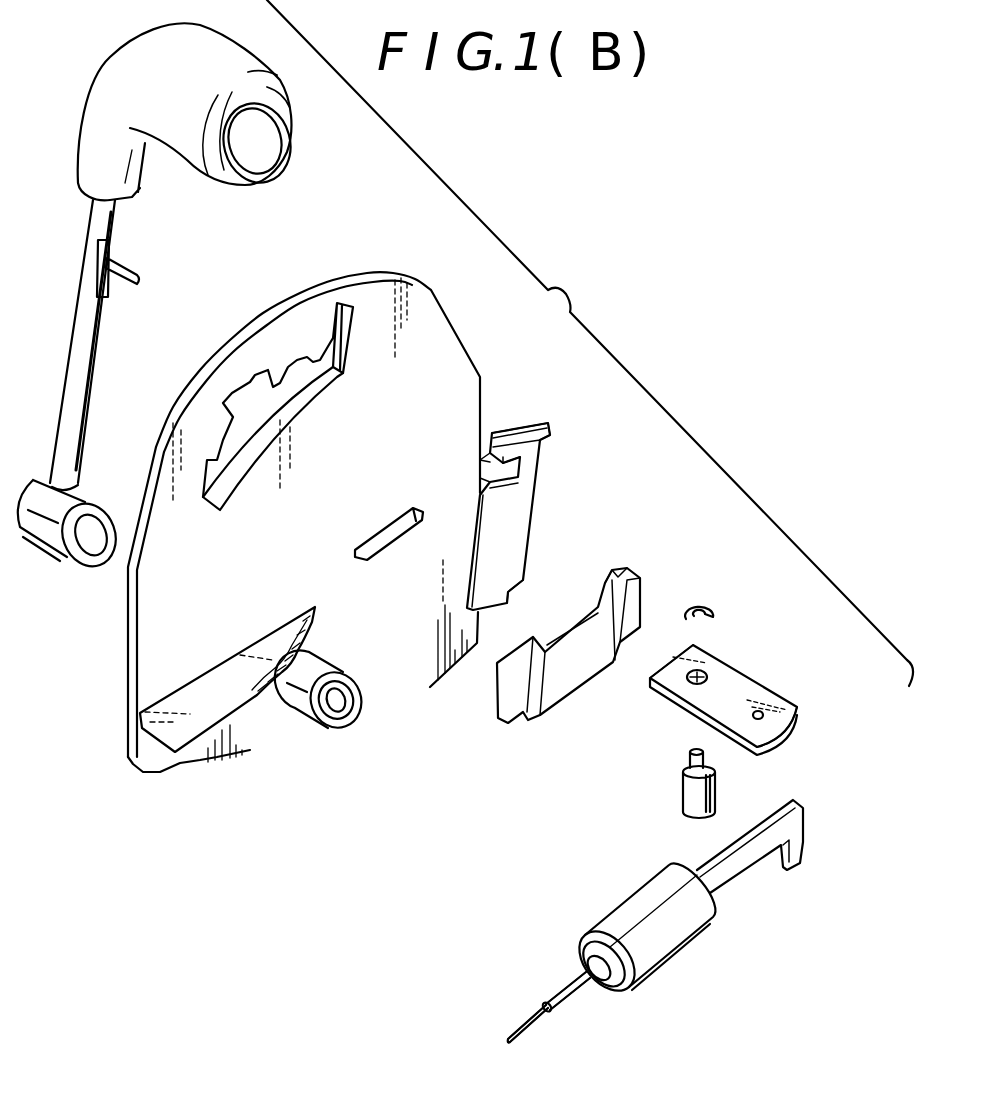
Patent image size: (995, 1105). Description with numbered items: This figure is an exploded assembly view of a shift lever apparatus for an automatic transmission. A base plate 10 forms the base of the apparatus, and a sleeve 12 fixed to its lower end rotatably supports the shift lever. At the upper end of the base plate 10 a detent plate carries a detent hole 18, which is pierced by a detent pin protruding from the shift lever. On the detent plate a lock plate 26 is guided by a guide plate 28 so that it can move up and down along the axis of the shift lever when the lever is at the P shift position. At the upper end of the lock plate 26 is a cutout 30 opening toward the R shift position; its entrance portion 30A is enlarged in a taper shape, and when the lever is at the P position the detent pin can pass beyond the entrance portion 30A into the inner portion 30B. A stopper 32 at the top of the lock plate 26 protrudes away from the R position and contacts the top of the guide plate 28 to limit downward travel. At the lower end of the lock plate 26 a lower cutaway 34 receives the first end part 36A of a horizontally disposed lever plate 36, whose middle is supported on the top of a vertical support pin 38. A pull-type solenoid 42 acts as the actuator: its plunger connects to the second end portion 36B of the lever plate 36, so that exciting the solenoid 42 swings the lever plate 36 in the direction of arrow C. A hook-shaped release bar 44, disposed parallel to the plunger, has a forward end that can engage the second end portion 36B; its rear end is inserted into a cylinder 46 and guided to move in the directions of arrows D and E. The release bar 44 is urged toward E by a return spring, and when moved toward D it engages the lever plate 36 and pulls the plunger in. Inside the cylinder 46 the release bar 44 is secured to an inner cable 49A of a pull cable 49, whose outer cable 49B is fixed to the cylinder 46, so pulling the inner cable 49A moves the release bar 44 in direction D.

The base plate 10 is at (232, 762).
The sleeve 12 is at (322, 662).
The detent hole 18 is at (267, 425).
The lock plate 26 is at (502, 522).
The guide plate 28 is at (633, 606).
The cutout 30 is at (474, 470).
The entrance portion 30A is at (482, 465).
The inner portion 30B is at (505, 458).
The stopper 32 is at (550, 432).
The lower cutaway 34 is at (515, 592).
The lever plate 36 is at (768, 697).
The first end part 36A is at (673, 657).
The second end portion 36B is at (795, 715).
The support pin 38 is at (683, 789).
The solenoid 42 is at (183, 707).
The release bar 44 is at (760, 827).
The cylinder 46 is at (623, 918).
The pull cable 49 is at (572, 1013).
The inner cable 49A is at (523, 1026).
The outer cable 49B is at (572, 983).
The R shift position R is at (300, 385).
The P shift position P is at (341, 300).
The arrow C is at (767, 670).
The arrow D is at (793, 895).
The arrow E is at (804, 884).